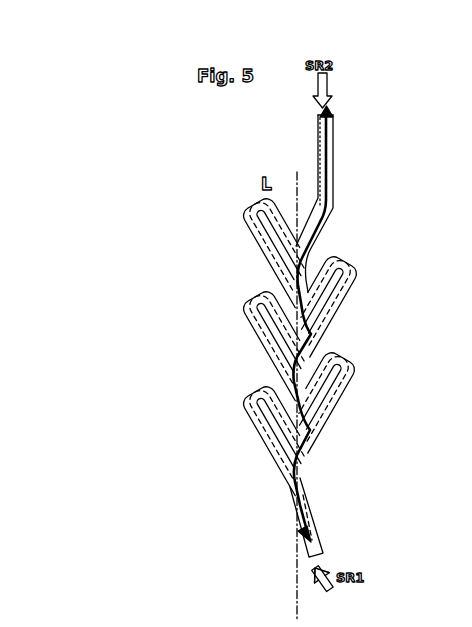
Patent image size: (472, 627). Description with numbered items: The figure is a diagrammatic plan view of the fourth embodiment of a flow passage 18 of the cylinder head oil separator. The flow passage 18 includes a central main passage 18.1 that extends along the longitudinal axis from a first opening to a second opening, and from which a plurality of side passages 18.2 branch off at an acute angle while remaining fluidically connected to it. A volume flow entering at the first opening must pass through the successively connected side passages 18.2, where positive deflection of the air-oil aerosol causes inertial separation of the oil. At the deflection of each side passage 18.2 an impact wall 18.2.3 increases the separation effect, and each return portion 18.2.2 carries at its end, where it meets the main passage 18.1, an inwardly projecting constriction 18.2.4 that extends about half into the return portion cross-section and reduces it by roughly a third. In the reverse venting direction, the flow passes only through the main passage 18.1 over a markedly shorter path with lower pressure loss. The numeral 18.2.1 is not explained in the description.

The flow passage 18 is at (283, 331).
The central main passage 18.1 is at (328, 200).
The side passage 18.2 is at (287, 359).
The deflection channel 18.2.1 is at (268, 462).
The return portion 18.2.2 is at (288, 432).
The impact wall 18.2.3 is at (265, 404).
The inwardly projecting constriction 18.2.4 is at (298, 449).